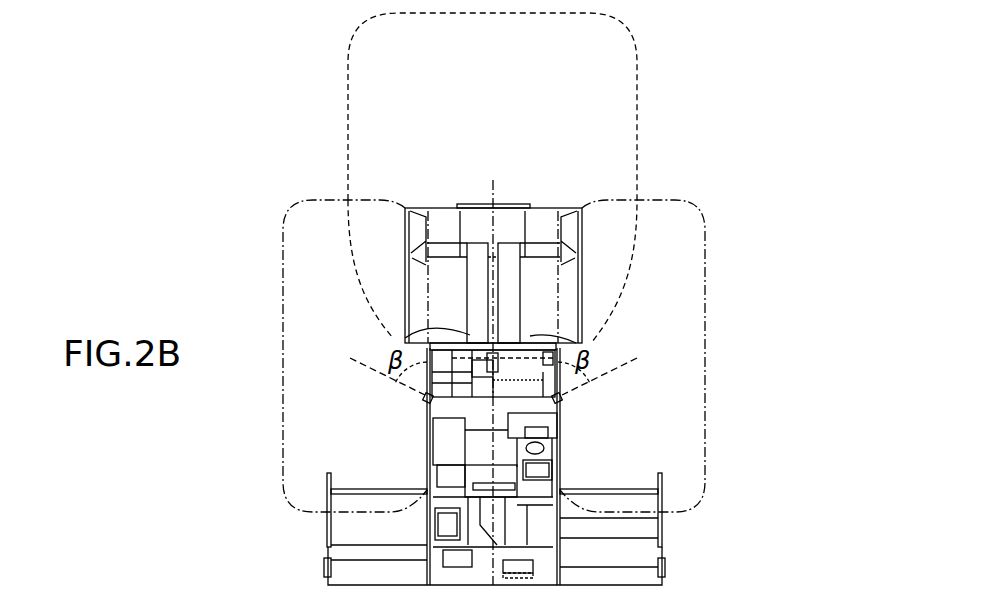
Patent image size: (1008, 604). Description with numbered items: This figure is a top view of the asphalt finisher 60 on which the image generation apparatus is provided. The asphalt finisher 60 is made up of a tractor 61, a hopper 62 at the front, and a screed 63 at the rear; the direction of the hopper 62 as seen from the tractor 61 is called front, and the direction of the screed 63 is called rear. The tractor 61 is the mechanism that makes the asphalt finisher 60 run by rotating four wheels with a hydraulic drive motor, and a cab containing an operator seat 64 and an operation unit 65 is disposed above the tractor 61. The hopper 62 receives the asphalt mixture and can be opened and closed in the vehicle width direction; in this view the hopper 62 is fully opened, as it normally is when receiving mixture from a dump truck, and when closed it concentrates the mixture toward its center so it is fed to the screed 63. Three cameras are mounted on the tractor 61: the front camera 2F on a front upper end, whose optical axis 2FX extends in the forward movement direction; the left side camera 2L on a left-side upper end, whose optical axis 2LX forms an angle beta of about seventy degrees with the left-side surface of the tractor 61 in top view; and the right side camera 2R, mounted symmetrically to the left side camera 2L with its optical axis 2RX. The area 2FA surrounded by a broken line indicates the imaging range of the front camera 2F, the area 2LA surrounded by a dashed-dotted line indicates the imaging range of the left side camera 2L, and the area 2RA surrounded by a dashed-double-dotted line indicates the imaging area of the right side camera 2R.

The asphalt finisher 60 is at (658, 171).
The tractor 61 is at (492, 464).
The hopper 62 is at (589, 292).
The screed 63 is at (674, 551).
The operator seat 64 is at (540, 466).
The operation unit 65 is at (558, 436).
The front camera 2F is at (490, 360).
The left side camera 2L is at (422, 400).
The right side camera 2R is at (563, 400).
The imaging range of the front camera 2FA is at (432, 105).
The imaging range of the left side camera 2LA is at (336, 274).
The imaging area of the right side camera 2RA is at (698, 274).
The optical axis of the front camera 2FX is at (498, 186).
The optical axis of the left side camera 2LX is at (361, 364).
The optical axis of the right side camera 2RX is at (626, 364).